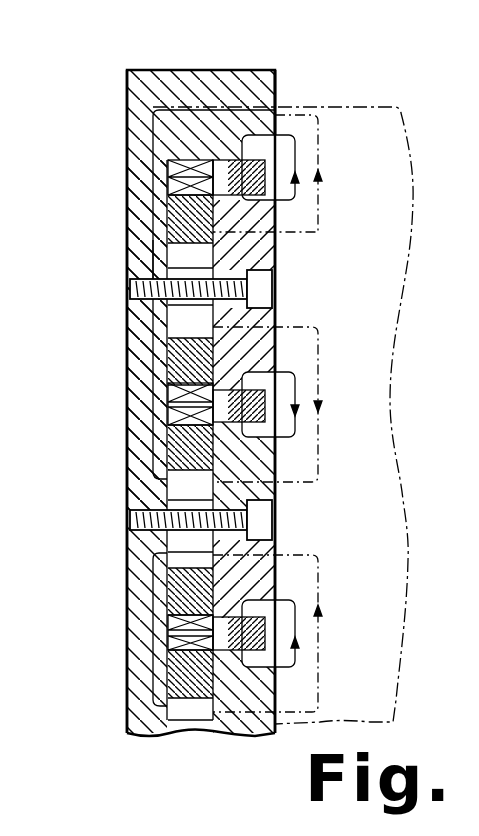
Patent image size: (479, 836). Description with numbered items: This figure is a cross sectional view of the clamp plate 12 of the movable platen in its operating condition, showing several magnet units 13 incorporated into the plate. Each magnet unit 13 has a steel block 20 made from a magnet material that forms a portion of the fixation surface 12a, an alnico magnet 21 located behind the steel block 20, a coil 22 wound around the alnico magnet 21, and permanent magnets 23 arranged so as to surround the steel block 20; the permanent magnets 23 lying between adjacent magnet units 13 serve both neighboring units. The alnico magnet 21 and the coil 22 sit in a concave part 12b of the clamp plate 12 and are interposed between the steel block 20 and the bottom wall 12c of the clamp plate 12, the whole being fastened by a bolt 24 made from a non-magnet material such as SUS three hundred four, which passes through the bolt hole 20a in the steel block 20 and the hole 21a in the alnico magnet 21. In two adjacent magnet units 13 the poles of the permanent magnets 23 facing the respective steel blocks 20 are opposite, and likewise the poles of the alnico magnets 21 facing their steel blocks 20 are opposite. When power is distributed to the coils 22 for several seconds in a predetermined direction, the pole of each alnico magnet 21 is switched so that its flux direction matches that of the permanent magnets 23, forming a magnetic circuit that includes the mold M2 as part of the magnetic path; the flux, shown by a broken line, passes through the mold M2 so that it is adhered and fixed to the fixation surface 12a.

The clamp plate 12 is at (207, 70).
The fixation surface 12a is at (288, 107).
The concave part 12b is at (168, 373).
The bottom wall 12c is at (152, 243).
The magnet unit 13 is at (331, 214).
The steel block 20 is at (278, 243).
The bolt hole 20a is at (155, 271).
The alnico magnet 21 is at (168, 197).
The hole 21a is at (167, 330).
The coil 22 is at (166, 151).
The permanent magnet 23 is at (285, 140).
The bolt 24 is at (276, 290).
The mold M2 is at (413, 121).